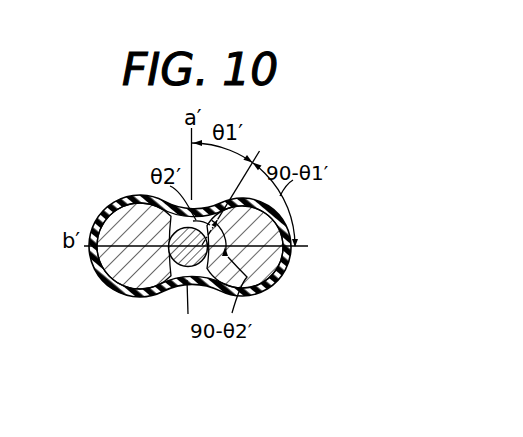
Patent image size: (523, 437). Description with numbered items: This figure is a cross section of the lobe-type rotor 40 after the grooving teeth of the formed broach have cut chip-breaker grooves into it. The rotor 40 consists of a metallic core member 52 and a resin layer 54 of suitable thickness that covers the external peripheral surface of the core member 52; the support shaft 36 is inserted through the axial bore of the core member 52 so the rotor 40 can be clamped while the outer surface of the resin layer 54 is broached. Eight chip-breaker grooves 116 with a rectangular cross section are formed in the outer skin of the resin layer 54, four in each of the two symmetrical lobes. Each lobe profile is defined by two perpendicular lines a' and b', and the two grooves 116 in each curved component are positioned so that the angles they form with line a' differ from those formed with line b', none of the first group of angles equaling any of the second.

The support shaft 36 is at (177, 274).
The lobe-type rotor 40 is at (188, 283).
The metallic core member 52 is at (259, 284).
The resin layer 54 is at (121, 202).
The chip-breaker grooves 116 is at (208, 209).